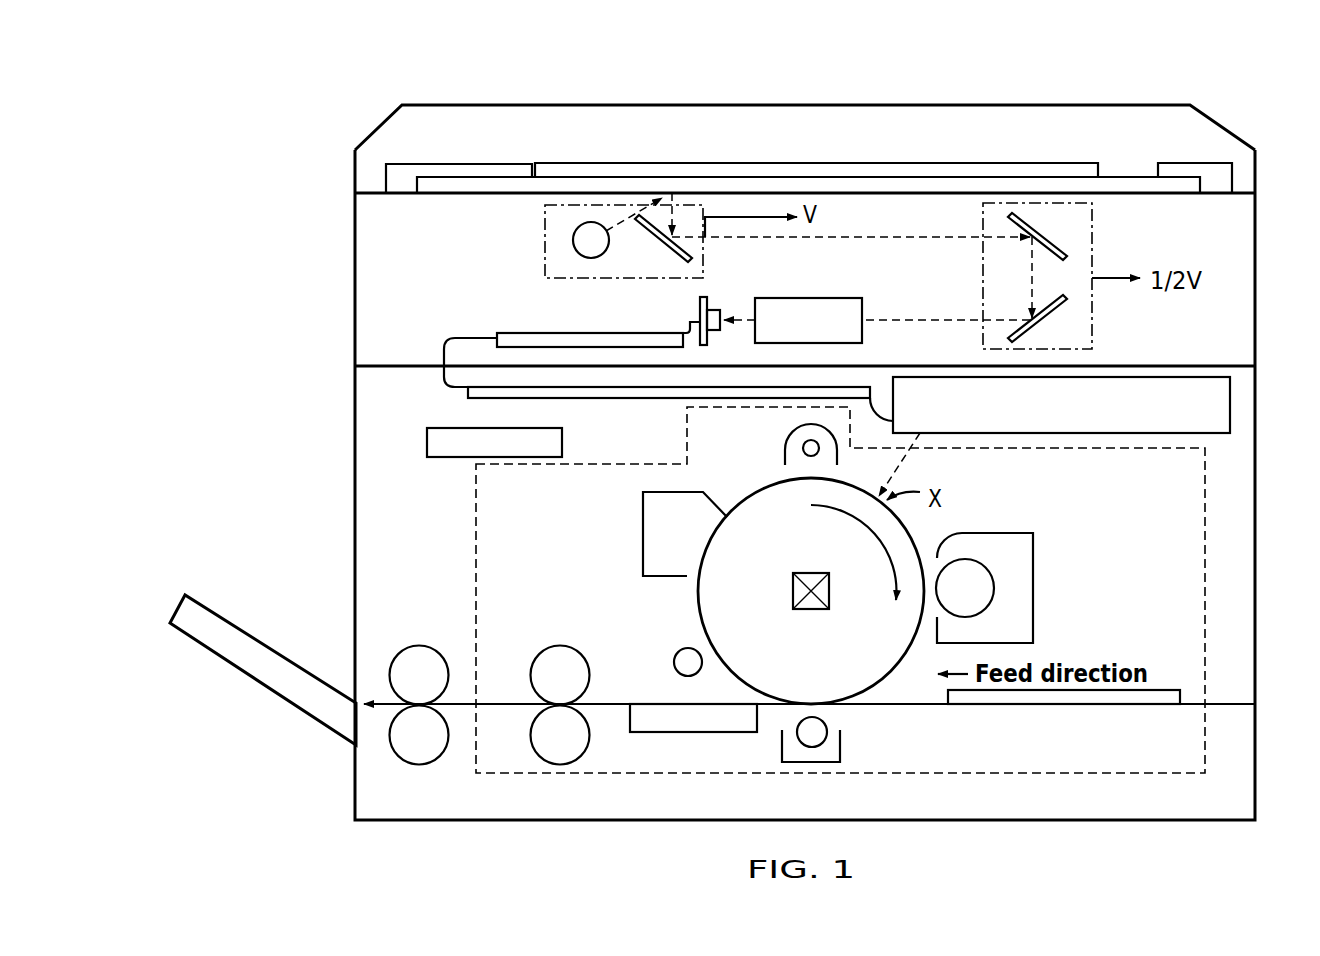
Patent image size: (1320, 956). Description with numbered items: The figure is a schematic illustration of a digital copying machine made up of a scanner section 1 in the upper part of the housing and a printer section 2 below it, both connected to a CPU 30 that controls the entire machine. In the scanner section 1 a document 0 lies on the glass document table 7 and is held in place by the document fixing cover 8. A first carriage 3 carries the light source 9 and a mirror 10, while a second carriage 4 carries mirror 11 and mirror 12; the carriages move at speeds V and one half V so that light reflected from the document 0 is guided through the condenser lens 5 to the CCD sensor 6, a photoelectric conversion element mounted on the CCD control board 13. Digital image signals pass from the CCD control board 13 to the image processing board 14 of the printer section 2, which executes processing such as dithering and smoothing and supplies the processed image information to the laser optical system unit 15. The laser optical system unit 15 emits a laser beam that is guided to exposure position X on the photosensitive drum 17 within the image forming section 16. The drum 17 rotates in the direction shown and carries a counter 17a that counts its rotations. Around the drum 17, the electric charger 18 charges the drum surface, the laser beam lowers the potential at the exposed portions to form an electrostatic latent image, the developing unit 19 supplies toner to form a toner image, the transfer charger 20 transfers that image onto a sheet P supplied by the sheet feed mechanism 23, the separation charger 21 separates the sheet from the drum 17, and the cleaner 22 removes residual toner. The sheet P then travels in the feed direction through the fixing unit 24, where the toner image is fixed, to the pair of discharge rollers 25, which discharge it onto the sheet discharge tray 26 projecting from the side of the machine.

The document 0 is at (588, 163).
The scanner section 1 is at (380, 336).
The printer section 2 is at (427, 480).
The first carriage 3 is at (540, 273).
The second carriage 4 is at (1093, 312).
The condenser lens 5 is at (862, 335).
The CCD sensor 6 is at (720, 310).
The glass document table 7 is at (1137, 177).
The document fixing cover 8 is at (908, 106).
The light source 9 is at (573, 243).
The mirror 10 is at (650, 233).
The mirror 11 is at (1034, 225).
The mirror 12 is at (1034, 328).
The CCD control board 13 is at (556, 336).
The image processing board 14 is at (640, 399).
The laser optical system unit 15 is at (1230, 403).
The image forming section 16 is at (1205, 525).
The photosensitive drum 17 is at (746, 508).
The counter 17a is at (829, 588).
The electric charger 18 is at (787, 445).
The developing unit 19 is at (1035, 562).
The transfer charger 20 is at (842, 750).
The separation charger 21 is at (677, 653).
The cleaner 22 is at (643, 540).
The sheet feed mechanism 23 is at (697, 726).
The fixing unit 24 is at (533, 664).
The pair of discharge rollers 25 is at (428, 688).
The sheet discharge tray 26 is at (276, 652).
The CPU 30 is at (565, 443).
The sheet P is at (1176, 688).